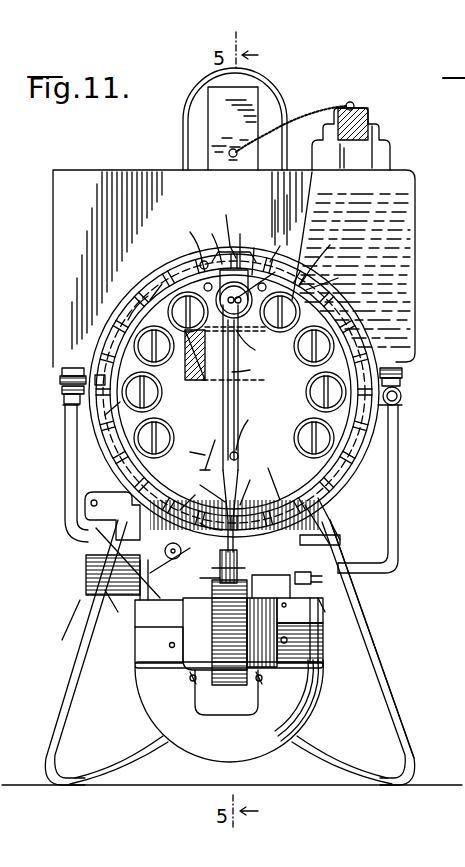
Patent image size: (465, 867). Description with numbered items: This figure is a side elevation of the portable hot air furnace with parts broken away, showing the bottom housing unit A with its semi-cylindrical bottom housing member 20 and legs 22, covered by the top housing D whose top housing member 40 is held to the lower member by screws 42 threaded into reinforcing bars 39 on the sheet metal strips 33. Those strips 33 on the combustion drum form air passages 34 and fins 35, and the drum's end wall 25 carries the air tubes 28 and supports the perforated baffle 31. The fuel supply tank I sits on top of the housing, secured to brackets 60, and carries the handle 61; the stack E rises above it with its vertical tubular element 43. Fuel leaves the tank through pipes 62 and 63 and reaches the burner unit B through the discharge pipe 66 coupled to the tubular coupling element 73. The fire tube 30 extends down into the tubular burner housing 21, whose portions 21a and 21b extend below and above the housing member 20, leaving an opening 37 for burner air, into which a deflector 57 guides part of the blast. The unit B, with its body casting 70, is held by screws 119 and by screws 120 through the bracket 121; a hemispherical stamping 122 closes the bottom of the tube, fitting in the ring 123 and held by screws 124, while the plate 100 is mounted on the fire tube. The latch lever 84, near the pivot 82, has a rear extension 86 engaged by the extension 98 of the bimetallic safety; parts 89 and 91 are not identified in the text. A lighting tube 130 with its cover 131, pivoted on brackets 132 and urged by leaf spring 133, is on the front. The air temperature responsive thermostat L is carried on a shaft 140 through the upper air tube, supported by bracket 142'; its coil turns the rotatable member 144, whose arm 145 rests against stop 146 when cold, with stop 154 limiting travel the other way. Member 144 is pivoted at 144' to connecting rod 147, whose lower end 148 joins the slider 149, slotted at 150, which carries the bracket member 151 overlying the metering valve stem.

The fuel supply tank I is at (418, 174).
The stack E is at (182, 97).
The handle 61 is at (246, 94).
The vertical tubular element 43 is at (268, 122).
The top housing D is at (90, 319).
The air passages 34 is at (146, 278).
The fins 35 is at (170, 266).
The sheet metal strips 33 is at (136, 294).
The air tubes 28 is at (162, 365).
The baffle 31 is at (178, 340).
The end wall 25 is at (266, 394).
The rotatable member 144 is at (228, 228).
The stop 154 is at (185, 243).
The bracket 142' is at (210, 241).
The pivot point 144' is at (246, 243).
The stop 146 is at (255, 253).
The arm 145 is at (270, 266).
The air temperature responsive thermostat L is at (319, 257).
The shaft 140 is at (338, 277).
The slot 150 is at (257, 344).
The connecting rod 147 is at (252, 365).
The lower end of connecting rod 148 is at (251, 432).
The slider 149 is at (198, 455).
The opening 37 is at (196, 472).
The bracket member 151 is at (197, 488).
The deflector 57 is at (260, 486).
The leaf spring 133 is at (100, 472).
The top housing member 40 is at (92, 356).
The brackets 60 is at (58, 380).
The screws 42 is at (62, 400).
The reinforcing bars 39 is at (100, 376).
The bottom housing member 20 is at (398, 425).
The pipe 63 is at (66, 445).
The pipe 62 is at (398, 462).
The discharge pipe 66 is at (398, 568).
The brackets 132 is at (100, 535).
The upper extension of burner housing tube 21b is at (140, 497).
The cover 131 is at (76, 572).
The lighting tube 130 is at (63, 622).
The screws 119 is at (108, 600).
The tubular burner housing 21 is at (144, 600).
The lower extension of burner housing tube 21a is at (143, 620).
The screws 124 is at (170, 650).
The legs 22 is at (386, 694).
The bottom housing unit A is at (386, 658).
The latch lever 84 is at (168, 570).
The cap 91 is at (212, 572).
The pivot 82 is at (212, 603).
The housing 89 is at (215, 634).
The extension 98 is at (268, 621).
The tubular coupling element 73 is at (282, 580).
The plate 100 is at (325, 616).
The ring 123 is at (322, 636).
The fire tube 30 is at (322, 520).
The rear extension 86 is at (322, 542).
The burner valve control unit B is at (203, 727).
The body casting 70 is at (240, 716).
The screws 120 is at (190, 680).
The bracket 121 is at (192, 688).
The hemispherical stamping 122 is at (300, 712).